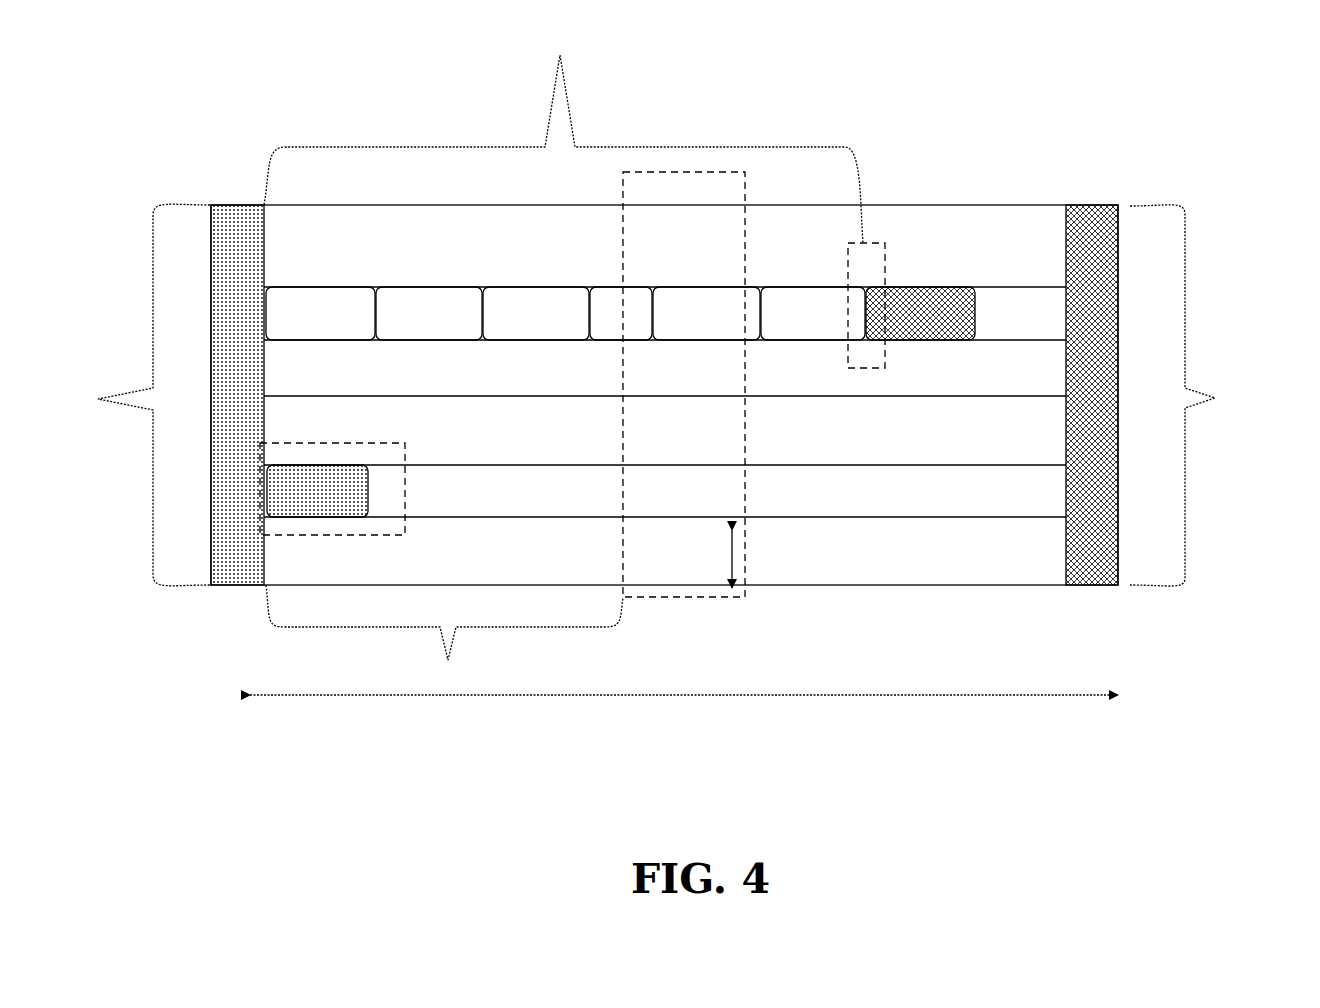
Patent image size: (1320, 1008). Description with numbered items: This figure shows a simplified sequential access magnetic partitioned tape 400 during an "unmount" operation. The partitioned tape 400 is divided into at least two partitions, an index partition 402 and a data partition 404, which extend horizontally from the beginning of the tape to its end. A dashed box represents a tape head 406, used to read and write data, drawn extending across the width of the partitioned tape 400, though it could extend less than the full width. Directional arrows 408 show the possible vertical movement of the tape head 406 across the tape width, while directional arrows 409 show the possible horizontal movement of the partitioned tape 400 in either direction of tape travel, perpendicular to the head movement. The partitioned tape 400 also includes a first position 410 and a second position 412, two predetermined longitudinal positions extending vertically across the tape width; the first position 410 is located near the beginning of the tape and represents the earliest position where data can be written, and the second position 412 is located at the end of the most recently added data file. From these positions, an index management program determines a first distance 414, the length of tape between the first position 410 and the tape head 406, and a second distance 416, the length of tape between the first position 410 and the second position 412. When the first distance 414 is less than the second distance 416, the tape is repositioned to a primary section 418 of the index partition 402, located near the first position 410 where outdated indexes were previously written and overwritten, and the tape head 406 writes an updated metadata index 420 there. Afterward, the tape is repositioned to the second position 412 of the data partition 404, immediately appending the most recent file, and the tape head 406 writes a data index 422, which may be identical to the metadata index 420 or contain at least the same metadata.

The partitioned tape 400 is at (668, 387).
The index partition 402 is at (316, 579).
The data partition 404 is at (316, 241).
The tape head 406 is at (643, 597).
The directional arrows 408 is at (742, 586).
The directional arrows 409 is at (865, 697).
The first position 410 is at (250, 203).
The second position 412 is at (873, 274).
The first distance 414 is at (444, 636).
The second distance 416 is at (563, 134).
The primary section 418 is at (405, 507).
The metadata index 420 is at (335, 473).
The data index 422 is at (922, 342).